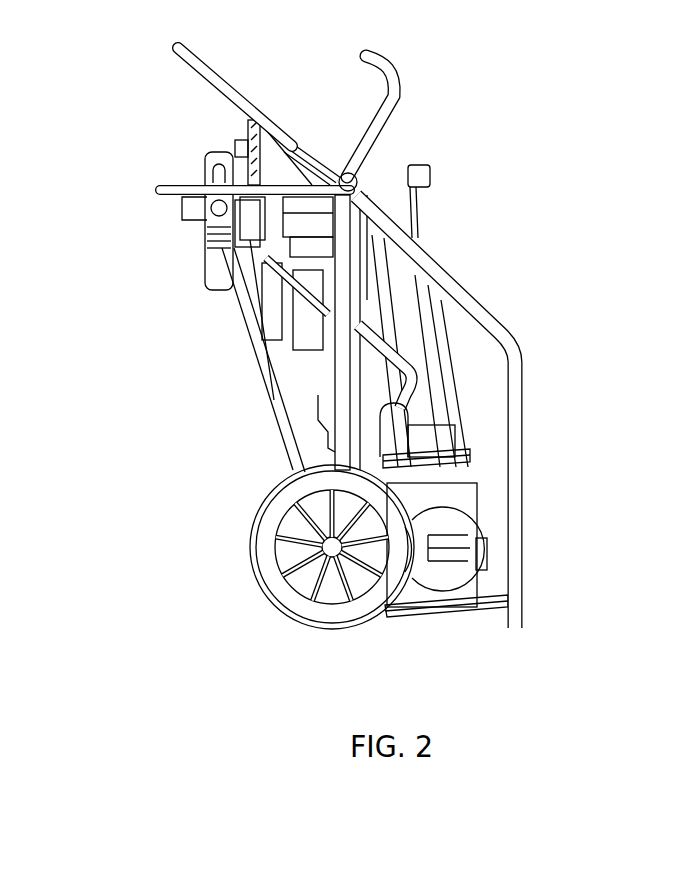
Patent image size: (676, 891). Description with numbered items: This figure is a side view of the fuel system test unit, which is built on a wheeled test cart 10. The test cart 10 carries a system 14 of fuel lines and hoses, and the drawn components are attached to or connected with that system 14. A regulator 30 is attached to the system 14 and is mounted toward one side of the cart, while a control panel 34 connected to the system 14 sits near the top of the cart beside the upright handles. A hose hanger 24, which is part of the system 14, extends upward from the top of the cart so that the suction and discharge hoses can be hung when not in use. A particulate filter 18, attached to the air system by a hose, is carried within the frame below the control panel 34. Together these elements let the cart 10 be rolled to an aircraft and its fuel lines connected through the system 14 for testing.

The test cart 10 is at (523, 377).
The system of fuel lines and hoses 14 is at (145, 348).
The particulate filter 18 is at (273, 256).
The hose hanger 24 is at (403, 97).
The regulator 30 is at (205, 241).
The control panel 34 is at (283, 127).